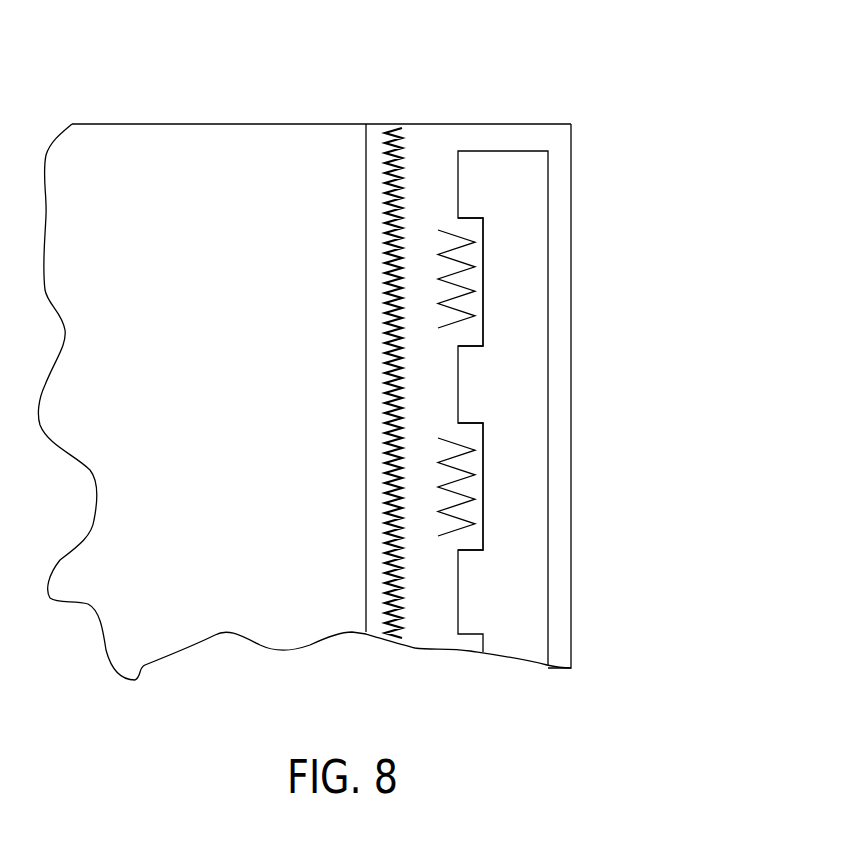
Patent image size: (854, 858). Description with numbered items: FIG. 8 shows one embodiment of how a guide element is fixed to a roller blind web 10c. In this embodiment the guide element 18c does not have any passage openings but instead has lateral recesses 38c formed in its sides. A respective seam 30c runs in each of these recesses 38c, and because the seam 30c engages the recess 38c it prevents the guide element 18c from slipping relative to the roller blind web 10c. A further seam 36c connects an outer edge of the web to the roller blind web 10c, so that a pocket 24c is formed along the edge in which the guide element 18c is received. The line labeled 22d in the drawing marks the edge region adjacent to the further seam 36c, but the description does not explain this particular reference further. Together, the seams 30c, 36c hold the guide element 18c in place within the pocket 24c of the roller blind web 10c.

The roller blind web 10c is at (188, 123).
The rail 22d is at (365, 165).
The further seam 36c is at (383, 265).
The pocket 24c is at (577, 105).
The guide element 18c is at (550, 202).
The seam 30c is at (488, 250).
The lateral recess 38c is at (483, 282).